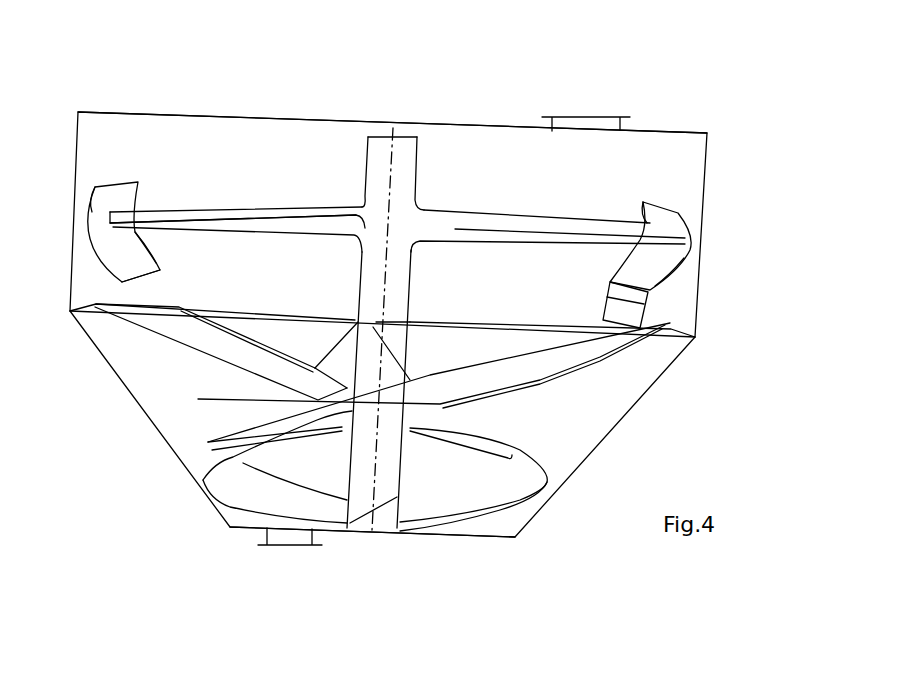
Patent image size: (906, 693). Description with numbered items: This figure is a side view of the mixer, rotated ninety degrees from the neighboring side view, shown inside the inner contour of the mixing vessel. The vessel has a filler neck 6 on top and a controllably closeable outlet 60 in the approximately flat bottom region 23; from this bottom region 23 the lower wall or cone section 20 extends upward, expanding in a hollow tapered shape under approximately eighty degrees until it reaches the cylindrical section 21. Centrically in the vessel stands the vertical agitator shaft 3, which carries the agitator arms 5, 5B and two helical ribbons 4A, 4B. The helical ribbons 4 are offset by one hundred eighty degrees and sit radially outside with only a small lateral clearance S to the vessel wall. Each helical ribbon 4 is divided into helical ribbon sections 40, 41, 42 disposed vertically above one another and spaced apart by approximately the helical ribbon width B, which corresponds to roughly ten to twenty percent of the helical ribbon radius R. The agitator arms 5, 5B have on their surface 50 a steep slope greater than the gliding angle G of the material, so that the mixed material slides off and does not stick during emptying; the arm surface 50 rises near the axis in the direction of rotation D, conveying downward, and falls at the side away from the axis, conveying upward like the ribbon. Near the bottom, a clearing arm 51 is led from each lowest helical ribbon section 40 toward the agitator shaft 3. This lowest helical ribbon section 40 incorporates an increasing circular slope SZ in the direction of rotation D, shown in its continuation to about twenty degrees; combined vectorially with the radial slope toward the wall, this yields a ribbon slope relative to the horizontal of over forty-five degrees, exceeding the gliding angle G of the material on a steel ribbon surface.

The agitator shaft 3 is at (375, 158).
The helical ribbon 4 is at (115, 183).
The helical ribbon 4A is at (170, 423).
The helical ribbon 4B is at (615, 405).
The agitator arm 5 is at (203, 202).
The agitator arm 5B is at (268, 220).
The filler neck 6 is at (588, 122).
The cone section 20 is at (155, 433).
The cylindrical section 21 is at (256, 118).
The bottom region 23 is at (255, 530).
The helical ribbon section 40 is at (238, 455).
The helical ribbon section 41 is at (195, 330).
The helical ribbon section 42 is at (147, 249).
The arm surface 50 is at (343, 347).
The clearing arm 51 is at (363, 517).
The outlet 60 is at (288, 548).
The helical ribbon width B is at (625, 305).
The direction of rotation D is at (340, 162).
The gliding angle G is at (360, 260).
The helical ribbon radius R is at (533, 233).
The lateral clearance S is at (700, 238).
The circular slope SZ is at (203, 368).